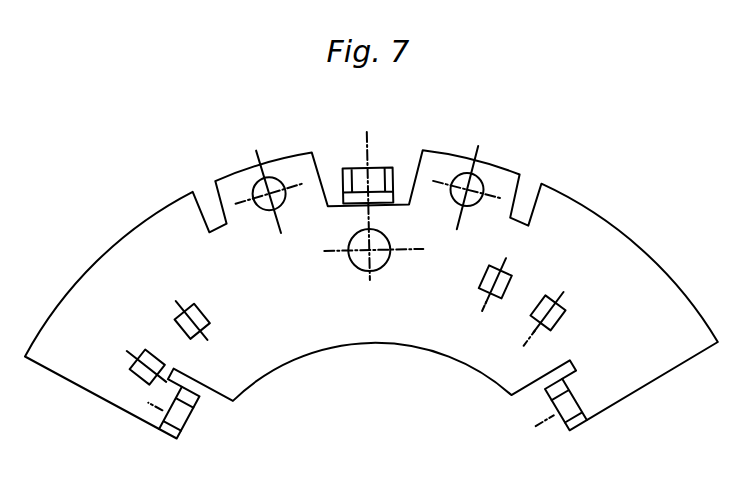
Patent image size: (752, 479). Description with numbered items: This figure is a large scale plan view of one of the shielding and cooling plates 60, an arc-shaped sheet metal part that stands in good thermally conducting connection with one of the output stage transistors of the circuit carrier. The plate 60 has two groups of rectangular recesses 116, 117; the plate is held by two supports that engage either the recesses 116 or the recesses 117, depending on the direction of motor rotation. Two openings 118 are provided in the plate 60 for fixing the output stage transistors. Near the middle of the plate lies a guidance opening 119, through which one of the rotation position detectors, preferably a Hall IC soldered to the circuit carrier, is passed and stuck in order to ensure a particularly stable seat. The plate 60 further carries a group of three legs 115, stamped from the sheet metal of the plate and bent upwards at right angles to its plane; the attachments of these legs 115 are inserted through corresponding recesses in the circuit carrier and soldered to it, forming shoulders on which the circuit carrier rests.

The shielding and cooling plate 60 is at (420, 345).
The legs 115 is at (378, 180).
The rectangular recesses 116 is at (145, 350).
The rectangular recesses 117 is at (197, 302).
The openings 118 is at (270, 195).
The guidance opening 119 is at (357, 260).